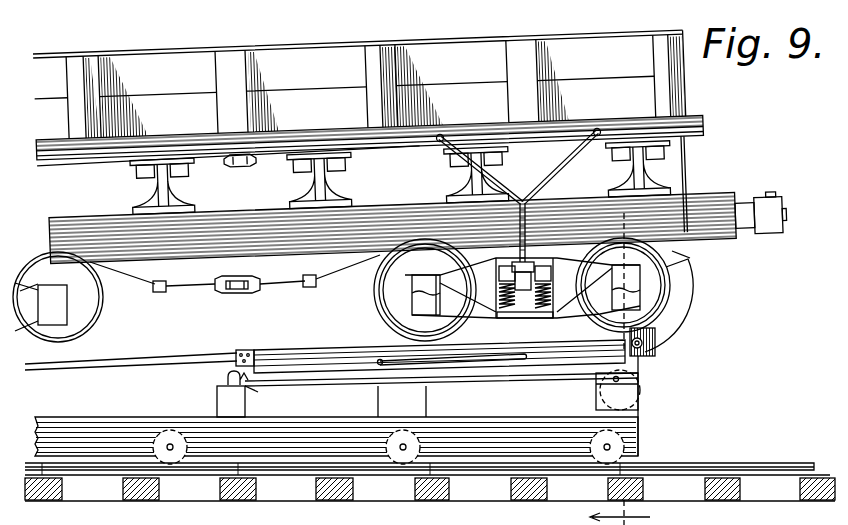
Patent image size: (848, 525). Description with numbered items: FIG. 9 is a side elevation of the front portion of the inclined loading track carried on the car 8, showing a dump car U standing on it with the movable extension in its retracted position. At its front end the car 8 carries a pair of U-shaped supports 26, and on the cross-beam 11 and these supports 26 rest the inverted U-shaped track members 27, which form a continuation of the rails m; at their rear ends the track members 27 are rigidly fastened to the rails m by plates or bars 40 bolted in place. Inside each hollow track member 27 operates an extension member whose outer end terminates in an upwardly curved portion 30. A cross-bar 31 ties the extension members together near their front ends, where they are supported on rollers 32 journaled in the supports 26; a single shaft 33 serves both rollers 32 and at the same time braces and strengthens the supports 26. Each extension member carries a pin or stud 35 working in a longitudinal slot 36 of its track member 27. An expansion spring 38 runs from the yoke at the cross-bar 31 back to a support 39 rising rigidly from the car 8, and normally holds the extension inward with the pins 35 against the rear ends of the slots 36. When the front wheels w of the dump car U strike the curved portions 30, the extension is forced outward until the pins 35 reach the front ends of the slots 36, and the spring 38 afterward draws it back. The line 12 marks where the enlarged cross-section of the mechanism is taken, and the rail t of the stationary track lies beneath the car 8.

The car 8 is at (148, 426).
The cross-beam 11 is at (418, 400).
The section line 12— 12 is at (629, 362).
The U-shaped supports 26 is at (640, 406).
The track members 27 is at (439, 343).
The upwardly curved portion 30 is at (685, 311).
The cross-bar 31 is at (645, 345).
The rollers 32 is at (648, 386).
The shaft 33 is at (620, 382).
The pin or stud 35 is at (380, 364).
The longitudinal slot 36 is at (508, 367).
The expansion spring 38 is at (256, 390).
The support 39 is at (216, 381).
The plates or bars 40 is at (250, 352).
The rails m is at (198, 357).
The front wheels w is at (655, 283).
The track rail t is at (710, 463).
The dump car U is at (410, 145).